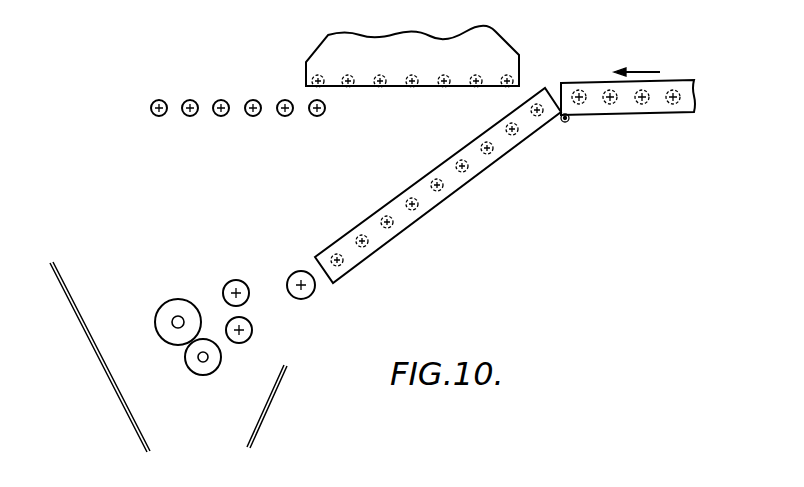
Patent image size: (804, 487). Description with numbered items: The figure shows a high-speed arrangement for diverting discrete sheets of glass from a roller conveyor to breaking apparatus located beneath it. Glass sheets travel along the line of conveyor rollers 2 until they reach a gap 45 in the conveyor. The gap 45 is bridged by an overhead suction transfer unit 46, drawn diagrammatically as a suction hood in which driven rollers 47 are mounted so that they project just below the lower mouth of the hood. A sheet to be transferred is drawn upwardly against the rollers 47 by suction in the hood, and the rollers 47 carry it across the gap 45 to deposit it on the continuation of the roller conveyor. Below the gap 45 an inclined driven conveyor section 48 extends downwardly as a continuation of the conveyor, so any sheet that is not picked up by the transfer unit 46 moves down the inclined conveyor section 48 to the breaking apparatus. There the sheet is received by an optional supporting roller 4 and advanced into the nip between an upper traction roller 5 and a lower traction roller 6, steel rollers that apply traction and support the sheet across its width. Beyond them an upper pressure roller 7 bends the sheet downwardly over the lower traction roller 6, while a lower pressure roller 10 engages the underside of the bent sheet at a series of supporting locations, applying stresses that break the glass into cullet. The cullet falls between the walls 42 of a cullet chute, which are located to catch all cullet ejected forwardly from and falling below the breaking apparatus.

The conveyor roller 2 is at (159, 100).
The supporting roller 4 is at (305, 299).
The upper traction roller 5 is at (238, 280).
The lower traction roller 6 is at (246, 338).
The upper pressure roller 7 is at (179, 316).
The lower pressure roller 10 is at (203, 362).
The cullet chute walls 42 is at (115, 400).
The gap 45 is at (406, 139).
The suction transfer unit 46 is at (325, 50).
The rollers 47 is at (355, 78).
The inclined driven conveyor section 48 is at (466, 186).